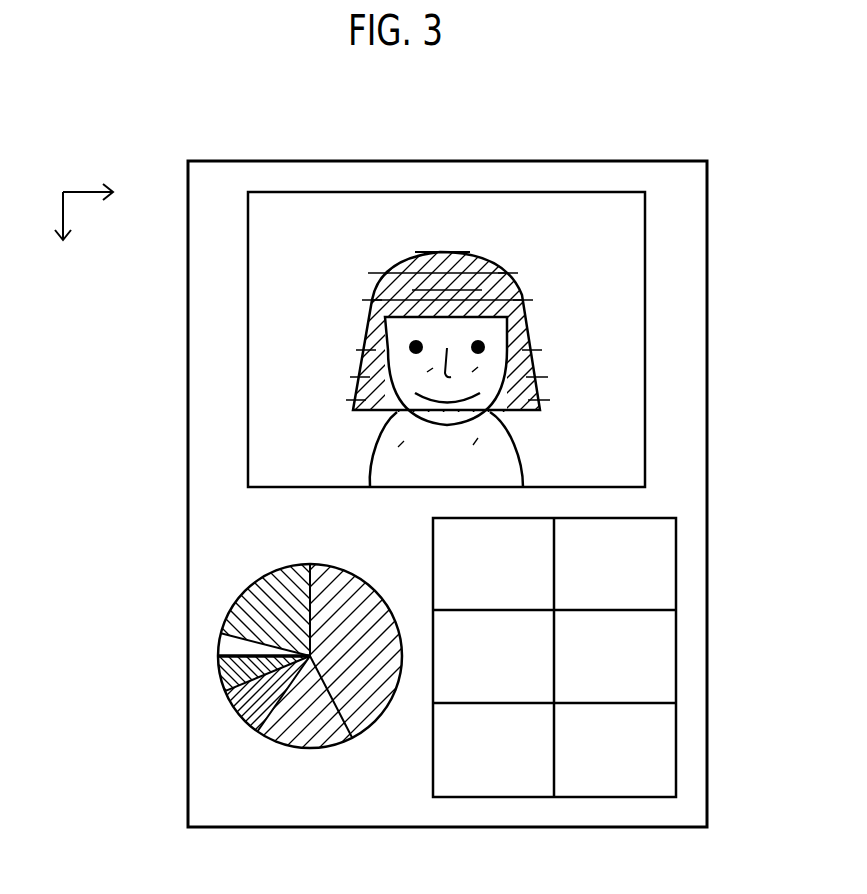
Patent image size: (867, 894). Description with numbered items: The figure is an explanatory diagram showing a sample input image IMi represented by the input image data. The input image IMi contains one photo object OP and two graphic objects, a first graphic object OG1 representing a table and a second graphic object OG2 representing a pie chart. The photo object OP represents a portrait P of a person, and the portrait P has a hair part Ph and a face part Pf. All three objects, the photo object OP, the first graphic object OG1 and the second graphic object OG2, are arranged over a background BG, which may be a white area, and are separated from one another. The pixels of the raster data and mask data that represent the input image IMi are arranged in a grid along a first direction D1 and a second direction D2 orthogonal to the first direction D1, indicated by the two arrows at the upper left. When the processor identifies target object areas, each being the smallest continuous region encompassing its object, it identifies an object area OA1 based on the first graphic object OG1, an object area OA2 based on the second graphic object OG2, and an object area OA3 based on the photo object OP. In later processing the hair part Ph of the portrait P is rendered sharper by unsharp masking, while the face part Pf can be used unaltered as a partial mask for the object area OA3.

The input image IMi is at (740, 193).
The background BG is at (203, 518).
The object area OA3 is at (645, 302).
The photo object OP is at (645, 363).
The portrait P is at (525, 400).
The hair part Ph is at (376, 302).
The face part Pf is at (418, 378).
The object area OA1 is at (676, 580).
The first graphic object OG1 is at (676, 658).
The object area OA2 is at (220, 655).
The second graphic object OG2 is at (220, 670).
The first direction D1 is at (112, 193).
The second direction D2 is at (66, 238).